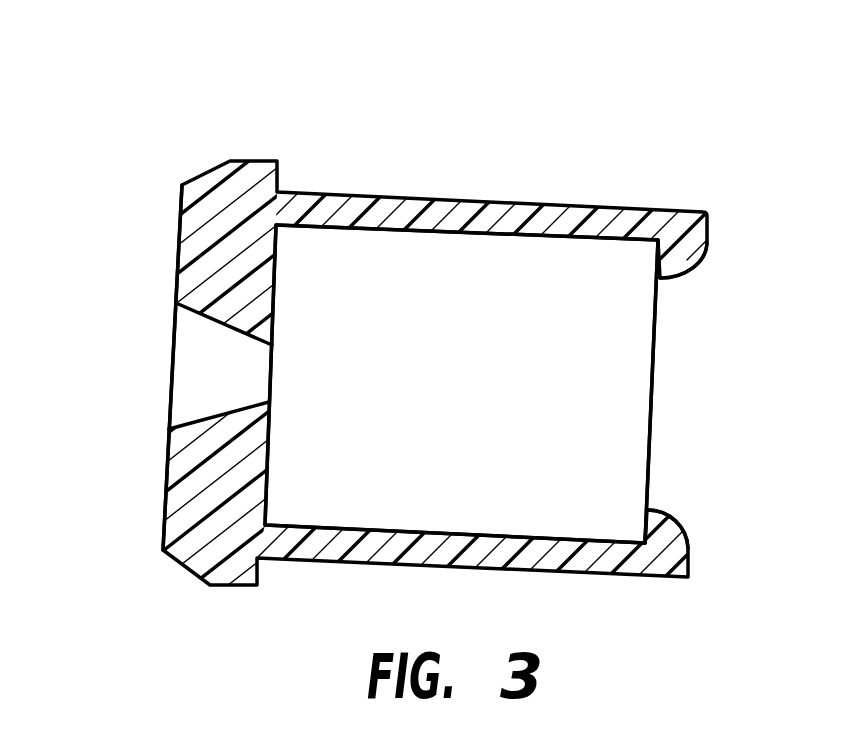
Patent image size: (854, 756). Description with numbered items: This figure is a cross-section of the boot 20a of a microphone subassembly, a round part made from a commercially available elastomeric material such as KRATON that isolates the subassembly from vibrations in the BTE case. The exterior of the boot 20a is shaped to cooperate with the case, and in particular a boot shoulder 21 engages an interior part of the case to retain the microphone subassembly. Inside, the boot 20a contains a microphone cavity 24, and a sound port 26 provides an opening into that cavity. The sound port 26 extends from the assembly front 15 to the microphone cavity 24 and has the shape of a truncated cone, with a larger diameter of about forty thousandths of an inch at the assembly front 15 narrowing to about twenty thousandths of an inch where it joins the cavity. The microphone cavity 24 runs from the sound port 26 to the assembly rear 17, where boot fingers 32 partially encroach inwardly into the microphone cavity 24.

The boot 20a is at (118, 135).
The boot shoulder 21 is at (255, 180).
The microphone cavity 24 is at (447, 270).
The assembly front 15 is at (179, 255).
The sound port 26 is at (188, 377).
The assembly rear 17 is at (653, 393).
The boot fingers 32 is at (694, 243).